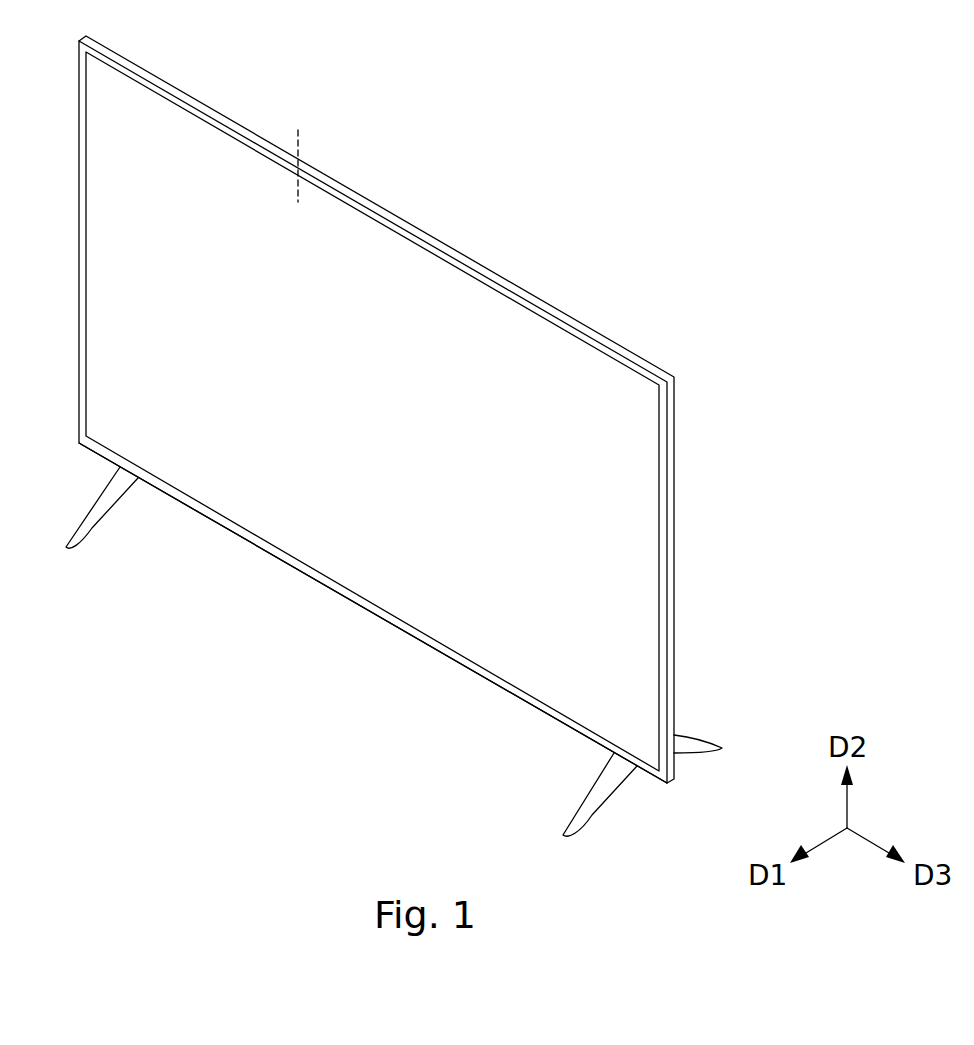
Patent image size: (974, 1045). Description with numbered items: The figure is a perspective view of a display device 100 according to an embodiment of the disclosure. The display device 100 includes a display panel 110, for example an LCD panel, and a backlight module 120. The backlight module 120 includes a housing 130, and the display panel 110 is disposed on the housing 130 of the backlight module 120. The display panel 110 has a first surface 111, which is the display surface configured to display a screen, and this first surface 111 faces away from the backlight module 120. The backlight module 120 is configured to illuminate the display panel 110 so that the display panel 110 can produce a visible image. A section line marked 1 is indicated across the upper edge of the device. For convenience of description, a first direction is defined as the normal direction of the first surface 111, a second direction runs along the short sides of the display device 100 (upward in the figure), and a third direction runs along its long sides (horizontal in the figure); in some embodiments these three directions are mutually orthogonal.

The display device 100 is at (520, 433).
The display panel 110 is at (467, 301).
The first surface 111 is at (372, 562).
The backlight module 120 is at (376, 409).
The housing 130 is at (373, 412).
The section line 1-1' 1 is at (282, 123).